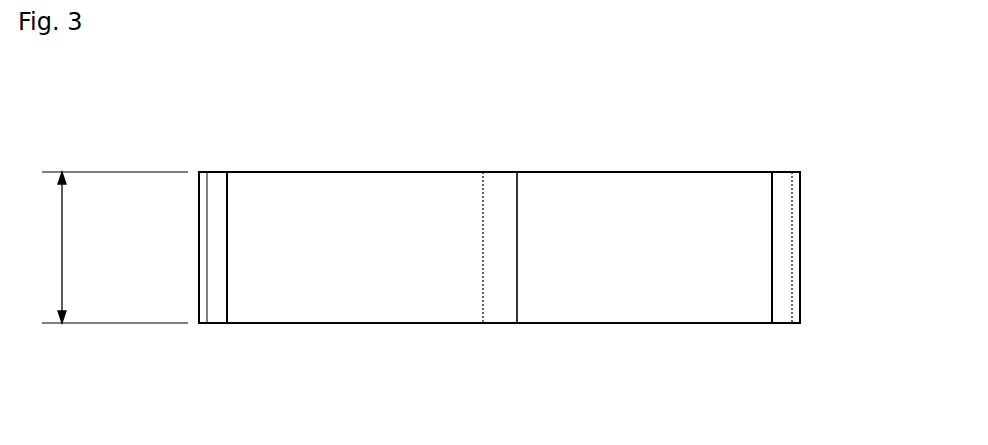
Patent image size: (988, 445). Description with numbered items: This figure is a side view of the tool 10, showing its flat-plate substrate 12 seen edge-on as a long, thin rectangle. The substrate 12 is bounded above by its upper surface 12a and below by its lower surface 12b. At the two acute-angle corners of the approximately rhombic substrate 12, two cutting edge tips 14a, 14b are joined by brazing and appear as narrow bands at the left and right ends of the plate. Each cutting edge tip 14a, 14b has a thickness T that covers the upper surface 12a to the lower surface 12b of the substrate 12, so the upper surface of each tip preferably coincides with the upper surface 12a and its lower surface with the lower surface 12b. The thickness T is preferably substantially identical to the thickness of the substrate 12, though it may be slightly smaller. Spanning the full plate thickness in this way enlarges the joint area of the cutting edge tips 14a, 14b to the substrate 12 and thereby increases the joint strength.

The tool 10 is at (570, 133).
The substrate 12 is at (618, 193).
The upper surface 12a is at (376, 171).
The lower surface 12b is at (377, 324).
The cutting edge tip 14a is at (205, 243).
The cutting edge tip 14b is at (790, 239).
The thickness T is at (115, 247).